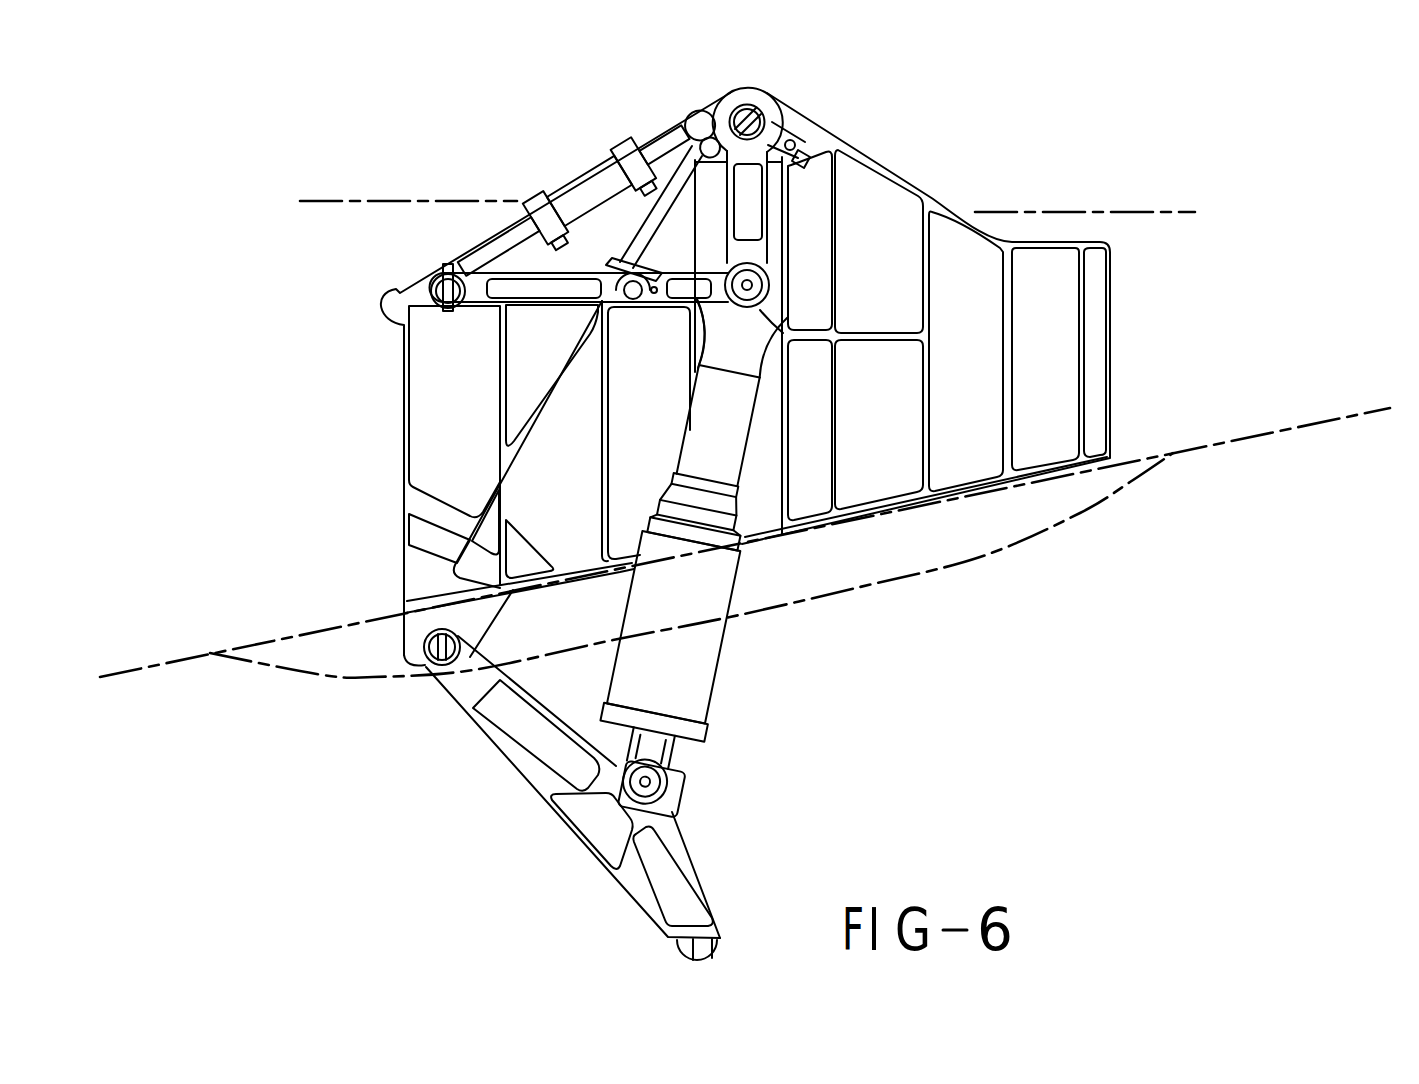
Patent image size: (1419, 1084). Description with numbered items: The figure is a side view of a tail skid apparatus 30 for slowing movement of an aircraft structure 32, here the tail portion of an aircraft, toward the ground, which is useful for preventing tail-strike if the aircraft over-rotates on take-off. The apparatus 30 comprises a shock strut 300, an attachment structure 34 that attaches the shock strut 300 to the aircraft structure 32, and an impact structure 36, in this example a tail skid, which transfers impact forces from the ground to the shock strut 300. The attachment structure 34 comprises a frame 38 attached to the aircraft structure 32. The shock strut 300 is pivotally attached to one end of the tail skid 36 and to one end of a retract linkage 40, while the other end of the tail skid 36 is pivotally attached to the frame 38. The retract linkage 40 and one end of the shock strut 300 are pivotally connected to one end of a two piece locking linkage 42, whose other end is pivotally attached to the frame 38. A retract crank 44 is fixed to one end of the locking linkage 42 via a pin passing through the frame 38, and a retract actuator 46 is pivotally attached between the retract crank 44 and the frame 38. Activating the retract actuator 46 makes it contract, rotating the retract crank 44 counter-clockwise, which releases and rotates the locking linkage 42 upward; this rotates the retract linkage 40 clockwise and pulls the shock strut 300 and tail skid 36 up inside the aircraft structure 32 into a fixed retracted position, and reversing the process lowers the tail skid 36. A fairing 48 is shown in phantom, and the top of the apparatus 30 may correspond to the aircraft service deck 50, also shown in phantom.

The apparatus 30 is at (326, 406).
The aircraft structure 32 is at (1240, 441).
The attachment structure 34 is at (388, 512).
The impact structure 36 is at (579, 841).
The frame 38 is at (1112, 342).
The retract linkage 40 is at (767, 220).
The two piece locking linkage 42 is at (534, 305).
The retract crank 44 is at (404, 289).
The retract actuator 46 is at (580, 183).
The fairing 48 is at (1010, 550).
The aircraft service deck 50 is at (1092, 212).
The shock strut 300 is at (726, 664).